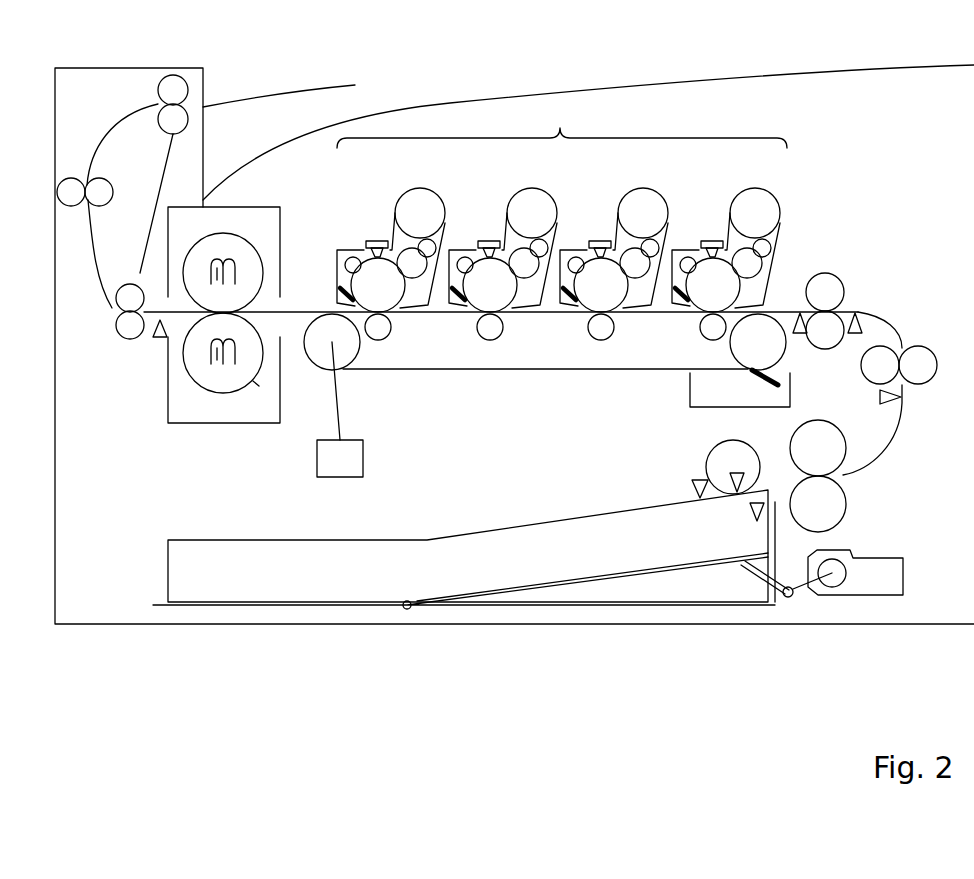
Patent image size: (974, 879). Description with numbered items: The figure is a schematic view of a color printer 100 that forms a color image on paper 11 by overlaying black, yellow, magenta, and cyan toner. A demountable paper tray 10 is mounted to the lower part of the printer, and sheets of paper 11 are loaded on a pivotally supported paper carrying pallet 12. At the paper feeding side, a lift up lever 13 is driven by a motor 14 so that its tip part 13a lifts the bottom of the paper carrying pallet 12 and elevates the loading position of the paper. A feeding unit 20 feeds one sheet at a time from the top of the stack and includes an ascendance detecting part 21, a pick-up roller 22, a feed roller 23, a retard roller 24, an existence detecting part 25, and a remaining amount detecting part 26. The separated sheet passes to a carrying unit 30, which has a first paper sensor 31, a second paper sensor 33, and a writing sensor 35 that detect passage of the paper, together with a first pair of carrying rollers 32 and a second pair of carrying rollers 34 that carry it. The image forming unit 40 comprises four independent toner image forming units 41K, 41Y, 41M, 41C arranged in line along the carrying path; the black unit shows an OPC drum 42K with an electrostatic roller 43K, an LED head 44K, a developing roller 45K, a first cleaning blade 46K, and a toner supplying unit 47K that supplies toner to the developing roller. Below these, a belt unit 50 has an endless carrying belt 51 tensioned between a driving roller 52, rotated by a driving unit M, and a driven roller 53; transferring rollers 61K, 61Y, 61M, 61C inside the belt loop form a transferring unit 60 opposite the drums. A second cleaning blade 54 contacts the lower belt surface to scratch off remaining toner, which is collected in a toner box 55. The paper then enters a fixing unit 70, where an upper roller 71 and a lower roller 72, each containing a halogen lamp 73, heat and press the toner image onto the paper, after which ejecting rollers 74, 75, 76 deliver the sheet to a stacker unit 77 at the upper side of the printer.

The color printer 100 is at (793, 68).
The paper tray 10 is at (162, 522).
The paper 11 is at (283, 540).
The paper carrying pallet 12 is at (670, 570).
The lift up lever 13 is at (766, 577).
The tip part 13a is at (740, 570).
The motor 14 is at (858, 596).
The feeding unit 20 is at (672, 453).
The ascendance detecting part 21 is at (747, 452).
The pick-up roller 22 is at (710, 452).
The feed roller 23 is at (818, 420).
The retard roller 24 is at (850, 500).
The existence detecting part 25 is at (692, 483).
The remaining amount detecting part 26 is at (763, 493).
The carrying unit 30 is at (895, 260).
The first paper sensor 31 is at (882, 406).
The first pair of carrying rollers 32 is at (912, 346).
The second paper sensor 33 is at (858, 315).
The second pair of carrying rollers 34 is at (845, 285).
The writing sensor 35 is at (797, 336).
The image forming unit 40 is at (587, 235).
The toner image forming unit 41C is at (373, 228).
The toner image forming unit 41M is at (503, 233).
The toner image forming unit 41Y is at (614, 233).
The toner image forming unit 41K is at (726, 233).
The OPC drum 42K is at (741, 292).
The electrostatic roller 43K is at (688, 256).
The LED head 44K is at (720, 252).
The developing roller 45K is at (765, 266).
The first cleaning blade 46K is at (680, 303).
The toner supplying unit 47K is at (779, 204).
The belt unit 50 is at (568, 382).
The carrying belt 51 is at (433, 371).
The driving roller 52 is at (338, 372).
The driven roller 53 is at (730, 350).
The second cleaning blade 54 is at (762, 383).
The toner box 55 is at (688, 372).
The transferring unit 60 is at (498, 361).
The transferring roller 61C is at (388, 337).
The transferring roller 61M is at (477, 330).
The transferring roller 61Y is at (588, 330).
The transferring roller 61K is at (699, 328).
The driving unit M is at (363, 458).
The fixing unit 70 is at (245, 208).
The upper roller 71 is at (250, 242).
The lower roller 72 is at (253, 386).
The halogen lamp 73 is at (237, 278).
The ejecting roller 74 is at (115, 325).
The ejecting roller 75 is at (73, 176).
The ejecting roller 76 is at (190, 85).
The stacker unit 77 is at (293, 127).